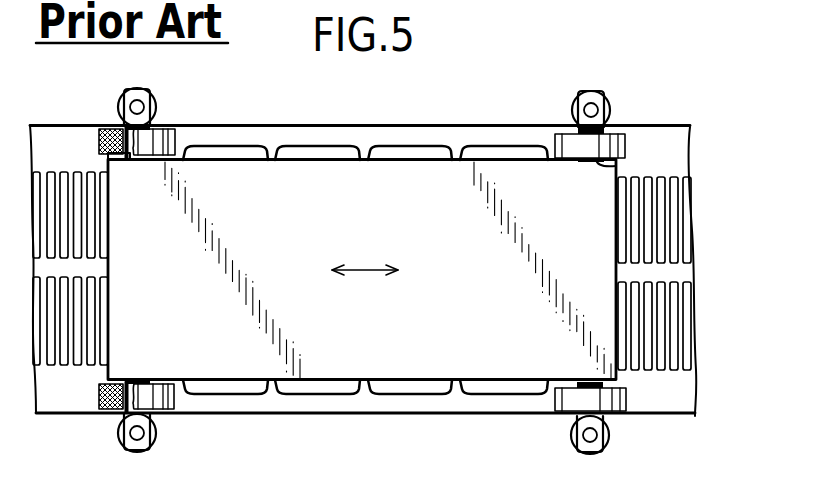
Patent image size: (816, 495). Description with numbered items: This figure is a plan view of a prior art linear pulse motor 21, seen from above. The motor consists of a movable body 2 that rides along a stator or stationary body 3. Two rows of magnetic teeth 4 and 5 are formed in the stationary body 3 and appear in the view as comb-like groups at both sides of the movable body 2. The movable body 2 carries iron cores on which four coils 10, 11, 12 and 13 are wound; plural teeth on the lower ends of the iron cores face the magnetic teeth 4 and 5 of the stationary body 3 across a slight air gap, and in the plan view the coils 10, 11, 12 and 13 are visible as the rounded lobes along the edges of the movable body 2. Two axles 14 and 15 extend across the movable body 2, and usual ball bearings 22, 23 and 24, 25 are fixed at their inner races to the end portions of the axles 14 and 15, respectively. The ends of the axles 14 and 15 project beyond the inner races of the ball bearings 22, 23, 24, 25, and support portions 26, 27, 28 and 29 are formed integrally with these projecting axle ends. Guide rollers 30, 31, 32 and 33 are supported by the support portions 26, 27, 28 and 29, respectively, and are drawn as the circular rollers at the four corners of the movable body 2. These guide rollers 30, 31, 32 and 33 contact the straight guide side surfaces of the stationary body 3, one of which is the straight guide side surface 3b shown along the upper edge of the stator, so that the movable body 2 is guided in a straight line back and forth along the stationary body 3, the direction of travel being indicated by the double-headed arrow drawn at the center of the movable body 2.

The movable body 2 is at (358, 188).
The stationary body 3 is at (668, 405).
The straight guide side surface 3b is at (372, 126).
The magnetic teeth 4 is at (680, 221).
The magnetic teeth 5 is at (682, 333).
The coil 10 is at (221, 387).
The coil 11 is at (315, 388).
The coil 12 is at (398, 388).
The coil 13 is at (478, 389).
The axle 14 is at (128, 162).
The axle 15 is at (608, 167).
The linear pulse motor 21 is at (282, 117).
The ball bearing 22 is at (173, 396).
The ball bearing 23 is at (163, 136).
The ball bearing 24 is at (628, 402).
The ball bearing 25 is at (625, 148).
The support portion 26 is at (142, 447).
The support portion 27 is at (134, 89).
The support portion 28 is at (593, 451).
The support portion 29 is at (585, 92).
The guide roller 30 is at (118, 432).
The guide roller 31 is at (118, 108).
The guide roller 32 is at (574, 437).
The guide roller 33 is at (572, 109).